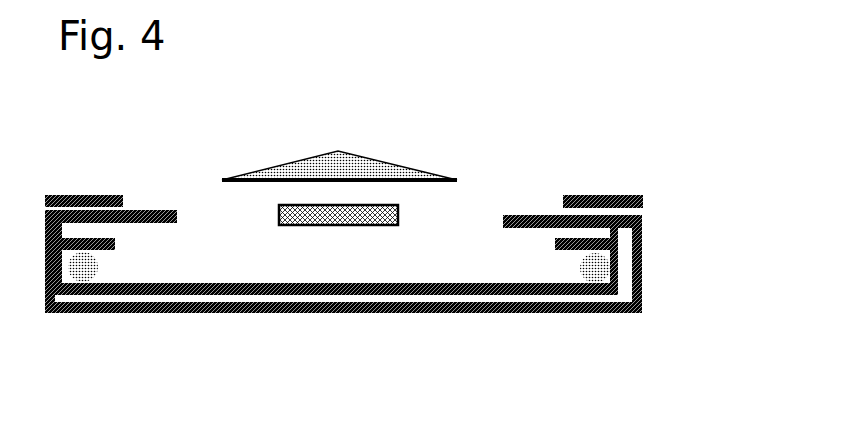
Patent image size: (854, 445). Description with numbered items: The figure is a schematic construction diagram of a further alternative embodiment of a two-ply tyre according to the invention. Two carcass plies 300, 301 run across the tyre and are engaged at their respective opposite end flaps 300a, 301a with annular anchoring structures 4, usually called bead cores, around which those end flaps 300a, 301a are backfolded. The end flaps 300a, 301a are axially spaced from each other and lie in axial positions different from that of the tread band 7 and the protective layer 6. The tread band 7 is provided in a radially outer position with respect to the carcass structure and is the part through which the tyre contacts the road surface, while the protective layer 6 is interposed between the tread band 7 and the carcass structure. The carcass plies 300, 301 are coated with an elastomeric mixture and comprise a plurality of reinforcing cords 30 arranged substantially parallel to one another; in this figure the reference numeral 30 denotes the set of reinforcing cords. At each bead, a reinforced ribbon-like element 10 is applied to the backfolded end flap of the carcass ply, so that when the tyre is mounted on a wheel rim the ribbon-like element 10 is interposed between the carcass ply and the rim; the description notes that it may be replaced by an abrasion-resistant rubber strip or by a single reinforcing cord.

The annular anchoring structure 4 is at (87, 290).
The protective layer 6 is at (315, 225).
The tread band 7 is at (338, 151).
The reinforced ribbon-like element 10 is at (67, 195).
The reinforcing cords 30 is at (343, 315).
The carcass ply 300 is at (307, 310).
The end flap 300a is at (153, 210).
The carcass ply 301 is at (207, 293).
The end flap 301a is at (113, 250).